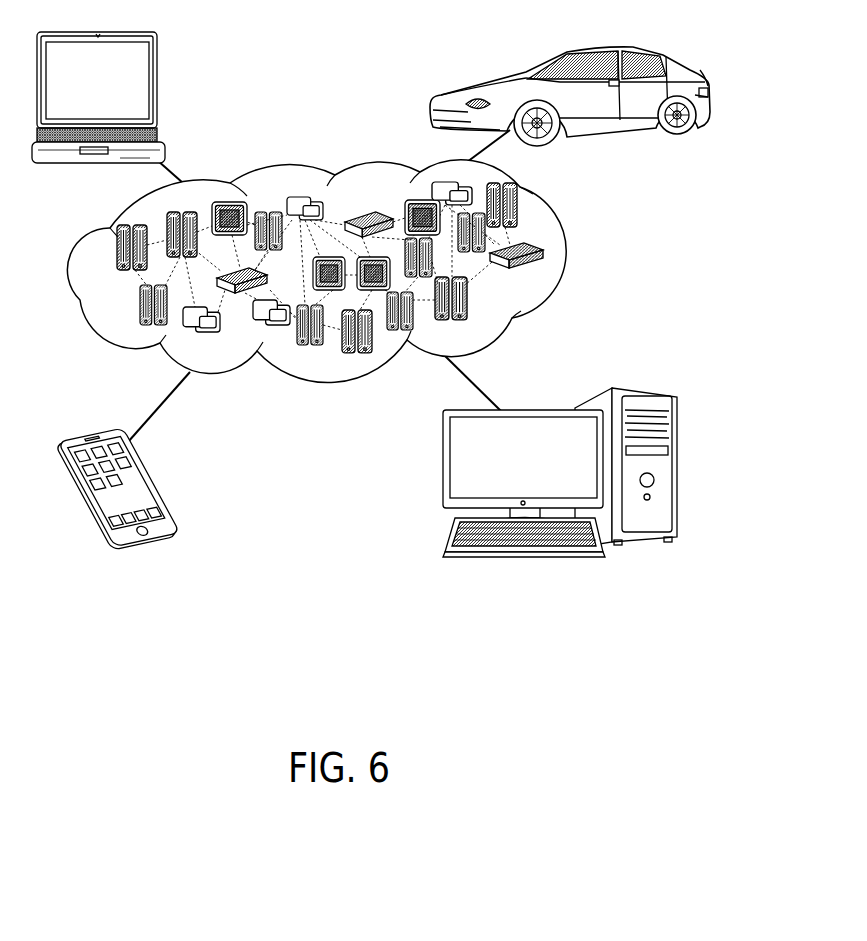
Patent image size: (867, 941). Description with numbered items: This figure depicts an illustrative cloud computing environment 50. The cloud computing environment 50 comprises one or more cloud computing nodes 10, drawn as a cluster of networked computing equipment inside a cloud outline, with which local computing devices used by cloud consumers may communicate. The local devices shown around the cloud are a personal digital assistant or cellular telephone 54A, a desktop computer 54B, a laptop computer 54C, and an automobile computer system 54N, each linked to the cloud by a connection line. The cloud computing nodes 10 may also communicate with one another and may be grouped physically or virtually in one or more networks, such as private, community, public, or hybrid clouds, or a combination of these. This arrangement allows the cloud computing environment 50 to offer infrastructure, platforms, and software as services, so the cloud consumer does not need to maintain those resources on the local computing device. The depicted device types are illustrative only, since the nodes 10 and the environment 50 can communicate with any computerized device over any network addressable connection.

The laptop computer 54C is at (143, 92).
The automobile computer system 54N is at (431, 104).
The cloud computing environment 50 is at (581, 258).
The cloud computing node 10 is at (546, 267).
The desktop computer 54B is at (603, 388).
The personal digital assistant or cellular telephone 54A is at (138, 484).